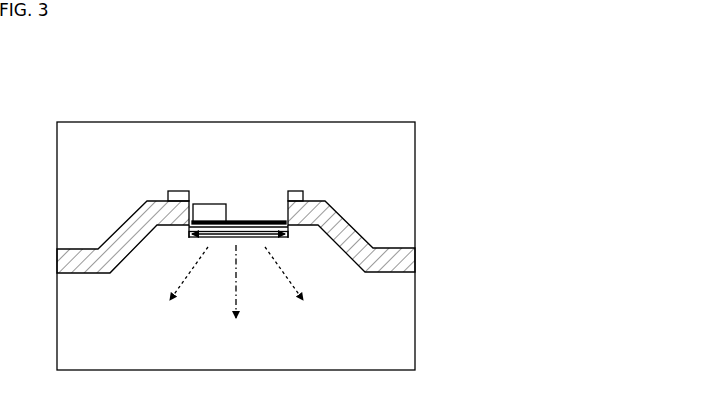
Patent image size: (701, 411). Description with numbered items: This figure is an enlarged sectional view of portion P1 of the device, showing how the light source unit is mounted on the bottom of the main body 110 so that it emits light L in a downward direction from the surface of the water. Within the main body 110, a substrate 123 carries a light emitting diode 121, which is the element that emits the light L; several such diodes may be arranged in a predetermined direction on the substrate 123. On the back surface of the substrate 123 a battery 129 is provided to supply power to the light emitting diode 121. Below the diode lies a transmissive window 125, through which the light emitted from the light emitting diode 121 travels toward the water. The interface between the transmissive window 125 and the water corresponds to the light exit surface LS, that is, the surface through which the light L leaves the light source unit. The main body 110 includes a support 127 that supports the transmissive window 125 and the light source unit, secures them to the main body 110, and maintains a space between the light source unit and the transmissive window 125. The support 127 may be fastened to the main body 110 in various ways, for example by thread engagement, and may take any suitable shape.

The portion P1 is at (74, 120).
The main body 110 is at (335, 210).
The light emitting diode 121 is at (236, 220).
The substrate 123 is at (260, 227).
The transmissive window 125 is at (250, 243).
The support 127 is at (295, 191).
The battery 129 is at (212, 204).
The light exit surface LS is at (222, 243).
The light L is at (236, 295).